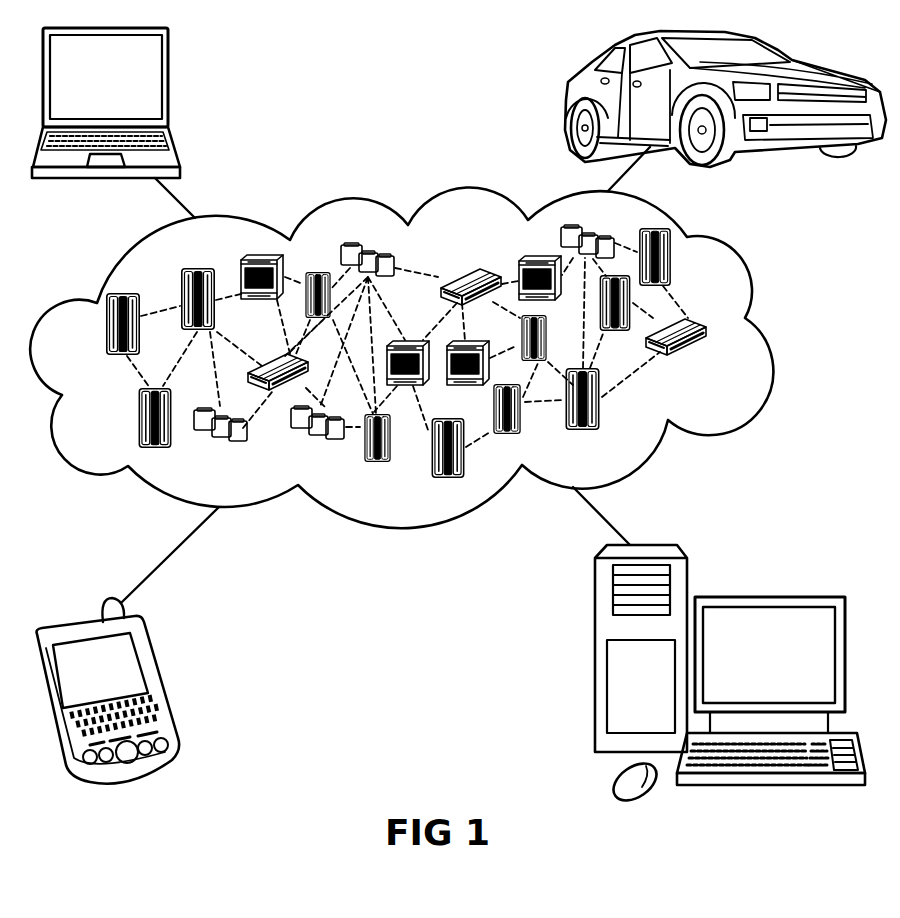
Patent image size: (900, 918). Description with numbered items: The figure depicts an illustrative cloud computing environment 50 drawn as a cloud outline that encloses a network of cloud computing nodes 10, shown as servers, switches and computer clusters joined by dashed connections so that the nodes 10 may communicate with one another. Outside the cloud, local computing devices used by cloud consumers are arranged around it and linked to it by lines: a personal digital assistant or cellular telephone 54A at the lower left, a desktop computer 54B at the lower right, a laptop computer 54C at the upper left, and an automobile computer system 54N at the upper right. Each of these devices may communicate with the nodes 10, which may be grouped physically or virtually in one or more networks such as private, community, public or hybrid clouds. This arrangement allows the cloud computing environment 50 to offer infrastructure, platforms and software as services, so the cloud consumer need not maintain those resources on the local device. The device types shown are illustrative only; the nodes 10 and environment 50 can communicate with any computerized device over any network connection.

The cloud computing nodes 10 is at (712, 362).
The cloud computing environment 50 is at (770, 334).
The personal digital assistant or cellular telephone 54A is at (160, 681).
The desktop computer 54B is at (765, 597).
The laptop computer 54C is at (168, 83).
The automobile computer system 54N is at (568, 96).